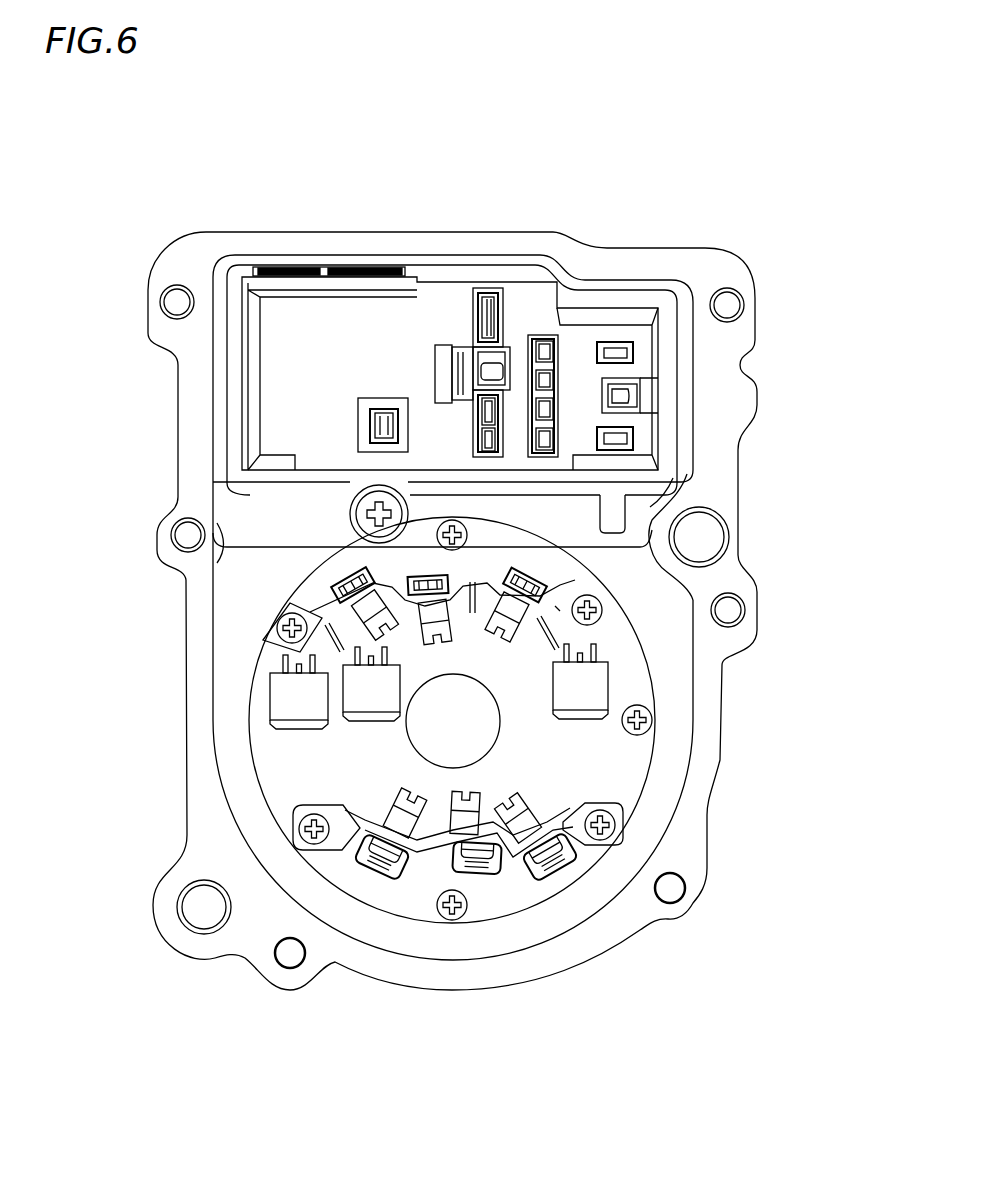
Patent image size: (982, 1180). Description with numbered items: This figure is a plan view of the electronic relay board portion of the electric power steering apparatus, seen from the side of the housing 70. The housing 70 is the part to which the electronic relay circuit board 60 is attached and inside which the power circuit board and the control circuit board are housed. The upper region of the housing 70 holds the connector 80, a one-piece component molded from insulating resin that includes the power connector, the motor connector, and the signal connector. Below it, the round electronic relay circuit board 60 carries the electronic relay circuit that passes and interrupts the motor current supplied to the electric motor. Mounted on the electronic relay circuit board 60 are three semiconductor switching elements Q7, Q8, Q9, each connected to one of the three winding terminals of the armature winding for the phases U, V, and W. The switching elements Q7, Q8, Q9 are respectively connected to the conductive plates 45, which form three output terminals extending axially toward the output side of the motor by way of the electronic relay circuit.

The housing 70 is at (677, 255).
The connector 80 is at (438, 293).
The electronic relay circuit board 60 is at (638, 680).
The conductive plates 45 is at (443, 577).
The semiconductor switching element Q7 is at (277, 705).
The semiconductor switching element Q8 is at (353, 675).
The semiconductor switching element Q9 is at (593, 673).